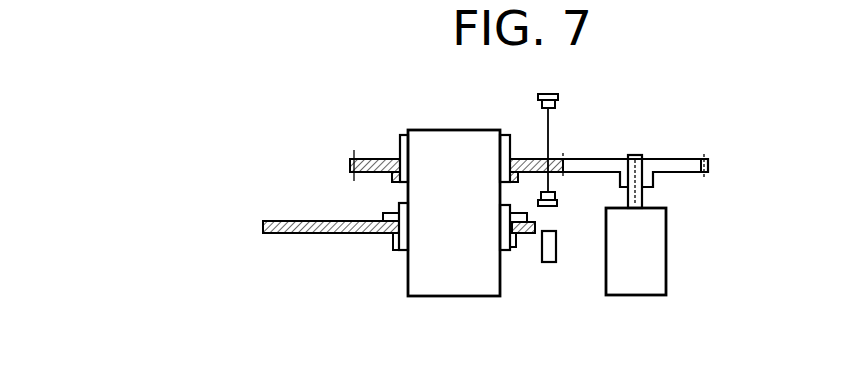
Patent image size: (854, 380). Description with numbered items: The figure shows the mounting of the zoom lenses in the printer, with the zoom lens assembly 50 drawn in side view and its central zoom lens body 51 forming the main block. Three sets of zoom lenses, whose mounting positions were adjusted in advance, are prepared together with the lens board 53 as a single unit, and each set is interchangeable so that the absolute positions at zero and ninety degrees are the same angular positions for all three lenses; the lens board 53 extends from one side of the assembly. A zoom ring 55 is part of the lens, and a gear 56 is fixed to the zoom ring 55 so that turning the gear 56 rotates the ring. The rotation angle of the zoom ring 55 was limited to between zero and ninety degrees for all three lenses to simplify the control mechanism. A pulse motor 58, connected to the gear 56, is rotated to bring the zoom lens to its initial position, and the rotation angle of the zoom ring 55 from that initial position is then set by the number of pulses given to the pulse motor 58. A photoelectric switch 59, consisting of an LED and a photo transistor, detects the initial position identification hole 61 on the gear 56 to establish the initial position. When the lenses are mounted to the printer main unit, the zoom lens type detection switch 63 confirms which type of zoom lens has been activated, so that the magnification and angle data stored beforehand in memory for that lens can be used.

The drive unit 50 is at (615, 133).
The housing 51 is at (452, 278).
The lens board 53 is at (325, 233).
The zoom ring 55 is at (399, 150).
The gear 56 is at (372, 159).
The pulse motor 58 is at (657, 250).
The photoelectric switch 59 is at (557, 206).
The initial position identification hole 61 is at (547, 157).
The zoom lens type detection switch 63 is at (549, 262).